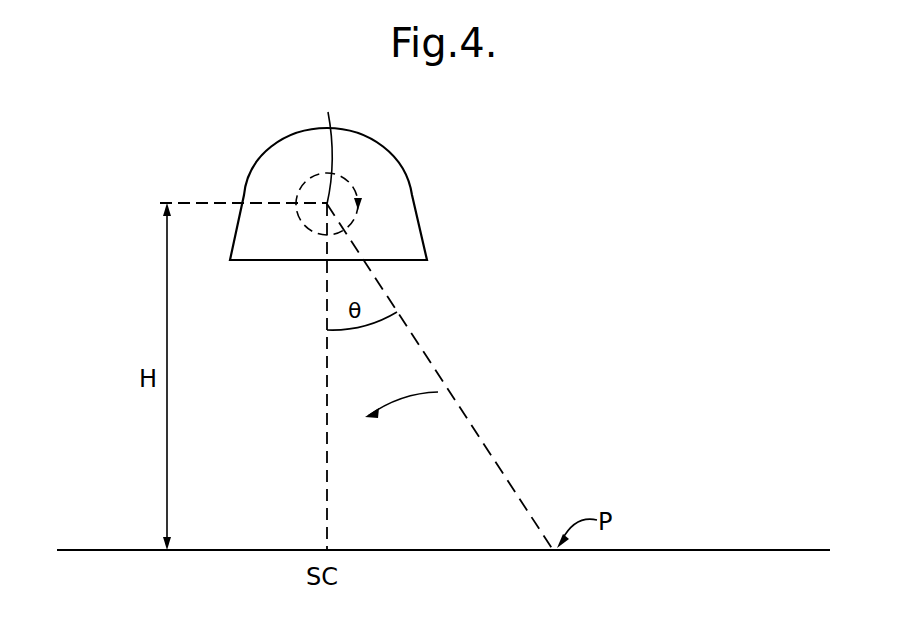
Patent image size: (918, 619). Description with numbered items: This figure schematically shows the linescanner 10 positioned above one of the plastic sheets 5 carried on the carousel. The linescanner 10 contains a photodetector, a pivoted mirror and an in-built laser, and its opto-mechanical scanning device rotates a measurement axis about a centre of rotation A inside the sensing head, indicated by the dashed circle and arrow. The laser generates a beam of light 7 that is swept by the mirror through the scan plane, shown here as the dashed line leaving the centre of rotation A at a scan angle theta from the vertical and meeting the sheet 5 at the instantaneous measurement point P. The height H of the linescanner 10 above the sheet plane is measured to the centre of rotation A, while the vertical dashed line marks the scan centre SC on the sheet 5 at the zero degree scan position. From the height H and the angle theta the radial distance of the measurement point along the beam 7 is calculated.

The linescanner 10 is at (245, 180).
The beam of light 7 is at (430, 360).
The plastic sheet 5 is at (231, 550).